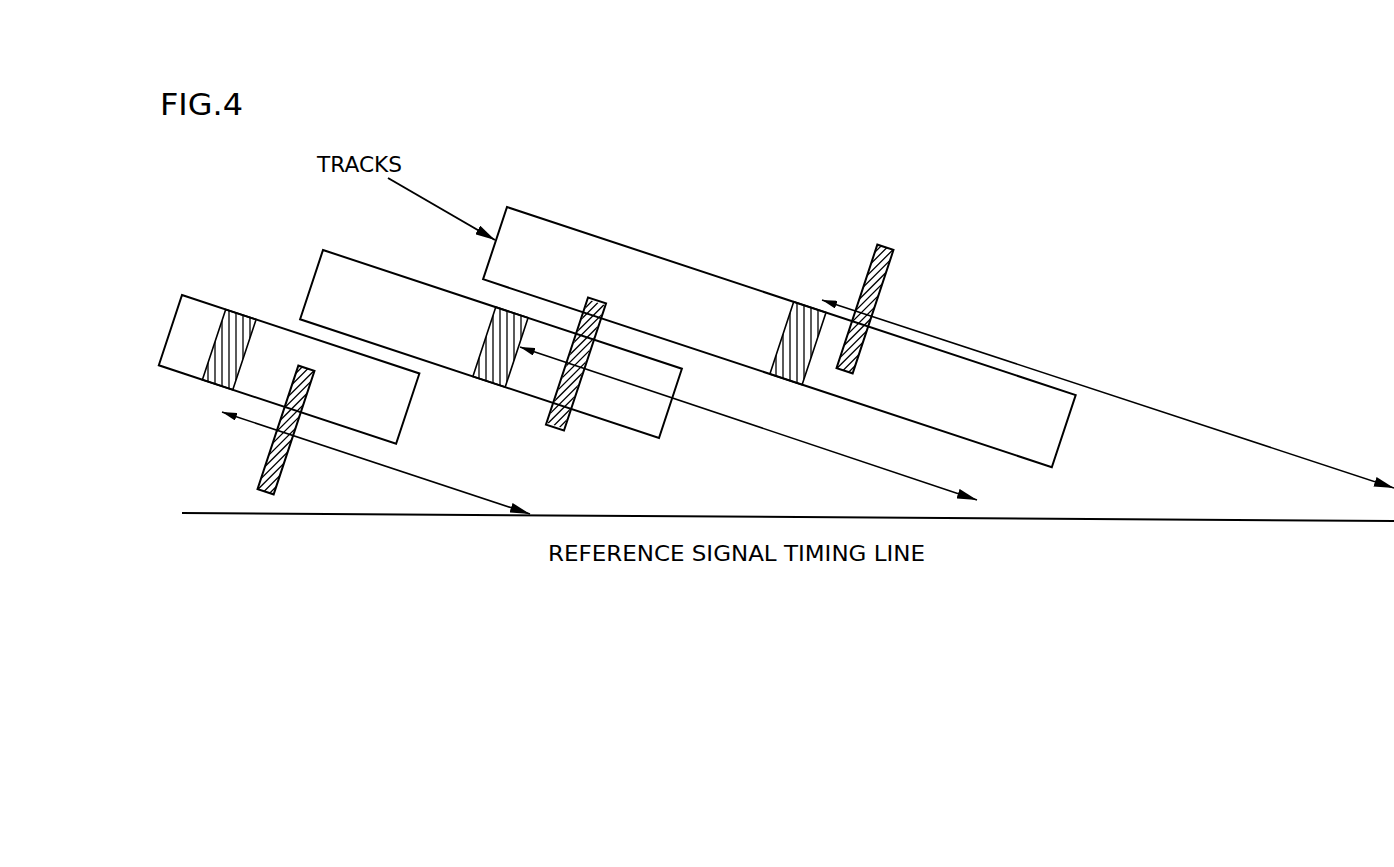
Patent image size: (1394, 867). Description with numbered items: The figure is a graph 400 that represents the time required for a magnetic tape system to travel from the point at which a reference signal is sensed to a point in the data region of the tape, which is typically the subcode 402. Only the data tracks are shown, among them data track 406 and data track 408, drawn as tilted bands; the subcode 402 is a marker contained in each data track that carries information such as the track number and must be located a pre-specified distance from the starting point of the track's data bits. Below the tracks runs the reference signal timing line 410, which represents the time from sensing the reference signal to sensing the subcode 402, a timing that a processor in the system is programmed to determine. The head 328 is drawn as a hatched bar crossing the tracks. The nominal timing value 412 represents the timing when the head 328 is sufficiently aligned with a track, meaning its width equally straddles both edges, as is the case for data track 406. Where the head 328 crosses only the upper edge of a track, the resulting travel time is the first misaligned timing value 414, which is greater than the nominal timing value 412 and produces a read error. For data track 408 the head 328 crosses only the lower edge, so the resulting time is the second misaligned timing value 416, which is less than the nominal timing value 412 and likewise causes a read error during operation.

The graph 400 is at (778, 208).
The subcode 402 is at (482, 337).
The data track 406 is at (302, 300).
The data track 408 is at (167, 328).
The reference signal timing line 410 is at (466, 518).
The TØ value 412 is at (823, 452).
The T1 414 is at (1162, 413).
The T2 416 is at (412, 477).
The head 328 is at (910, 262).